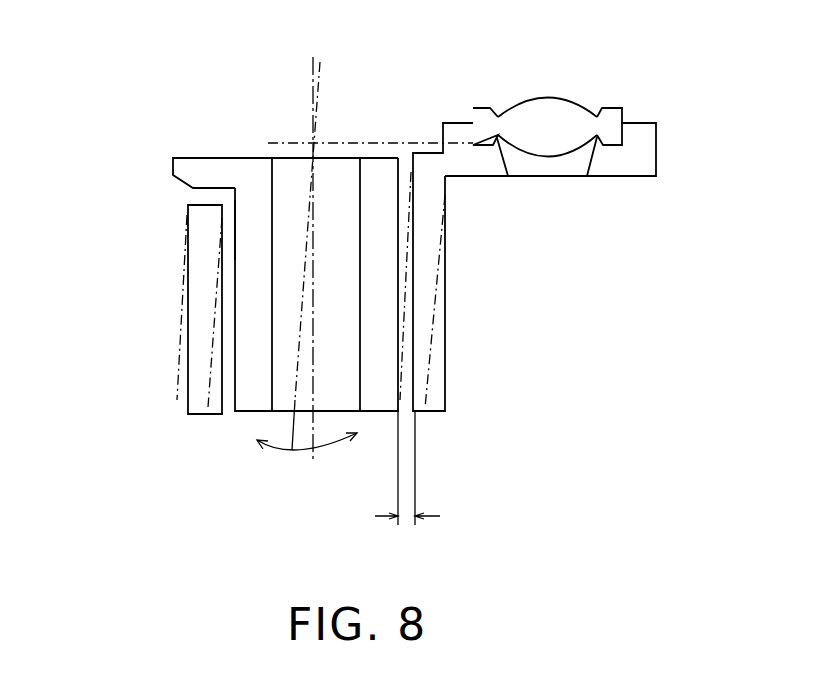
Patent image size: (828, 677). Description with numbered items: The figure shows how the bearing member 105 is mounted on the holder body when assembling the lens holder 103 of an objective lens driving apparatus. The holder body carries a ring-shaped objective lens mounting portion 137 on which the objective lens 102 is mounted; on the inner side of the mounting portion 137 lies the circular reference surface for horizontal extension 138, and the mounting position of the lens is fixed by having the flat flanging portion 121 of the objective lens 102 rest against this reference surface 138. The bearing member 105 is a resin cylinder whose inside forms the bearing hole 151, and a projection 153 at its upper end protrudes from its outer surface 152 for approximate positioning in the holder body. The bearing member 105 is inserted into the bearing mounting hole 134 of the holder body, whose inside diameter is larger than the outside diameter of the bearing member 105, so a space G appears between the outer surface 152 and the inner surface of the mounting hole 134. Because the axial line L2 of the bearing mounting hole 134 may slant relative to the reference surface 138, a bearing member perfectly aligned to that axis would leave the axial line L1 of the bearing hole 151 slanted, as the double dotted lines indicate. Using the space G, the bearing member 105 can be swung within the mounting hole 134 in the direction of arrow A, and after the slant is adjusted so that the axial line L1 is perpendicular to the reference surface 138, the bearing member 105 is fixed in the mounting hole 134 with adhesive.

The objective lens 102 is at (550, 113).
The flat flanging portion 121 is at (614, 119).
The reference surface for horizontal extension 138 is at (617, 142).
The objective lens mounting portion 137 is at (637, 163).
The lens holder 103 is at (452, 227).
The projection 153 is at (220, 167).
The bearing member 105 is at (253, 167).
The bearing hole 151 is at (273, 175).
The outer surface 152 is at (232, 228).
The bearing mounting hole 134 is at (226, 297).
The axial line of bearing hole L1 is at (317, 452).
The axial line of bearing mounting hole L2 is at (277, 453).
The arrow A is at (292, 450).
The space G is at (416, 484).